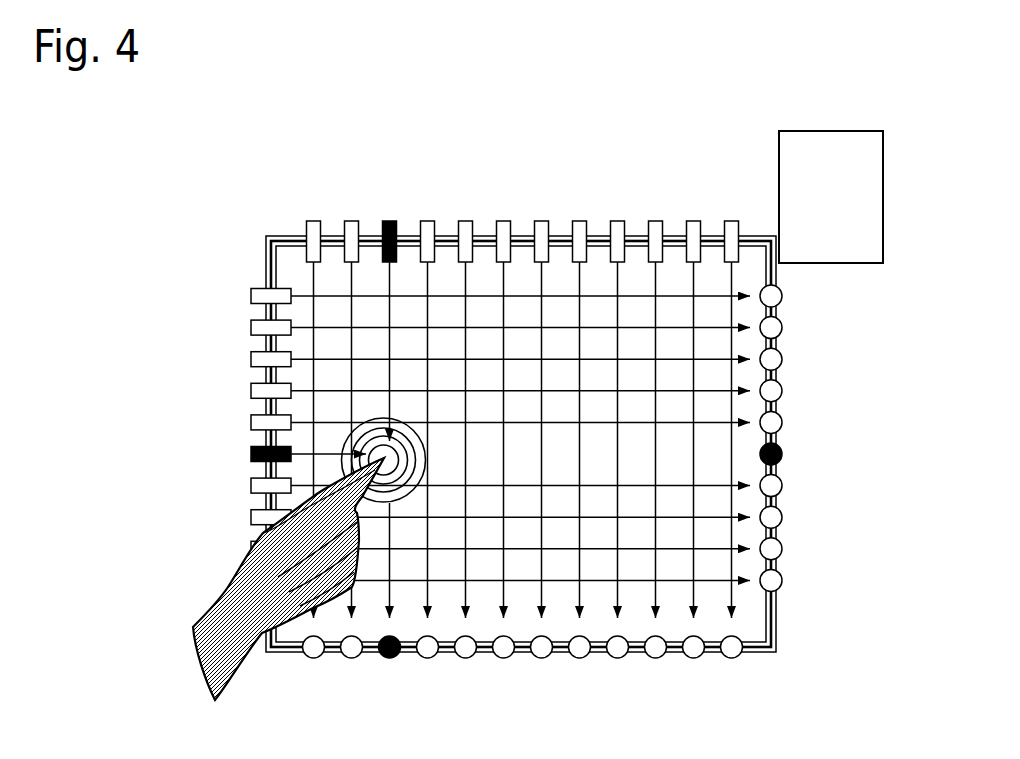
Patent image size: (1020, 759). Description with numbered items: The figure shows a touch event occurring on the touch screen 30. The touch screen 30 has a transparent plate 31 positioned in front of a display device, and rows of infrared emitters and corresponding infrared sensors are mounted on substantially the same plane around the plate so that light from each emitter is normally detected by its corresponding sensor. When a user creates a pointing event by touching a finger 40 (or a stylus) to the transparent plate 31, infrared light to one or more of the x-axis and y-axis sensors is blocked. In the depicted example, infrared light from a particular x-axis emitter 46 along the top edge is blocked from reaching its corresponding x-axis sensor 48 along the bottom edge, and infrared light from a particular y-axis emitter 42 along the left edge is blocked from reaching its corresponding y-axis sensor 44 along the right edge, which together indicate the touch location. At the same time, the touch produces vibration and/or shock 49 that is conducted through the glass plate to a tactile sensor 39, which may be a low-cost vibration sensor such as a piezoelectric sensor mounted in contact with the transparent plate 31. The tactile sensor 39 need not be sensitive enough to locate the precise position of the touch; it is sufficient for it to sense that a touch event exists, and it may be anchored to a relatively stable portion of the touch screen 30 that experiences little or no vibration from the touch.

The touch screen 30 is at (559, 434).
The transparent plate 31 is at (780, 618).
The tactile sensor 39 is at (890, 257).
The finger 40 is at (243, 685).
The y-axis emitter 42 is at (242, 455).
The y-axis sensor 44 is at (782, 452).
The x-axis emitter 46 is at (395, 212).
The x-axis sensor 48 is at (398, 663).
The vibration and/or shock 49 is at (410, 497).